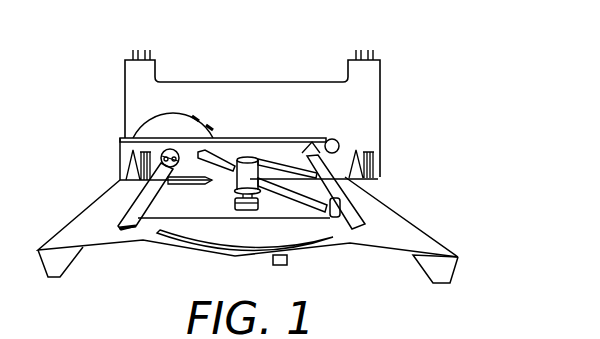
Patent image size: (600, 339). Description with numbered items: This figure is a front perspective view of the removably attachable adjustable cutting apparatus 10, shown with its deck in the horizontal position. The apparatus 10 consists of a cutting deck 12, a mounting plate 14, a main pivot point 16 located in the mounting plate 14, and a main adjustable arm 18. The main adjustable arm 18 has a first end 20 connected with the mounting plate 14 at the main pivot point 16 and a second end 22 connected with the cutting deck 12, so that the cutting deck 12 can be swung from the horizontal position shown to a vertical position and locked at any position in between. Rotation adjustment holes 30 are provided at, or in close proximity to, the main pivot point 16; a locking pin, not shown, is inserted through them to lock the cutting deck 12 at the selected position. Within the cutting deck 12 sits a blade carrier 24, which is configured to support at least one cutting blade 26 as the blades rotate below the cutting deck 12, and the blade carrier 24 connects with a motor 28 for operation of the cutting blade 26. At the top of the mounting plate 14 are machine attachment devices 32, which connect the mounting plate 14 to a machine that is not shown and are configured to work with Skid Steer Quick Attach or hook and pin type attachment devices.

The removably attachable adjustable cutting apparatus 10 is at (468, 104).
The cutting deck 12 is at (433, 223).
The mounting plate 14 is at (237, 100).
The main pivot point 16 is at (158, 156).
The main adjustable arm 18 is at (268, 137).
The first end 20 is at (163, 148).
The second end 22 is at (343, 192).
The blade carrier 24 is at (233, 208).
The cutting blade 26 is at (287, 264).
The motor 28 is at (197, 162).
The rotation adjustment holes 30 is at (212, 126).
The machine attachment devices 32 is at (133, 54).